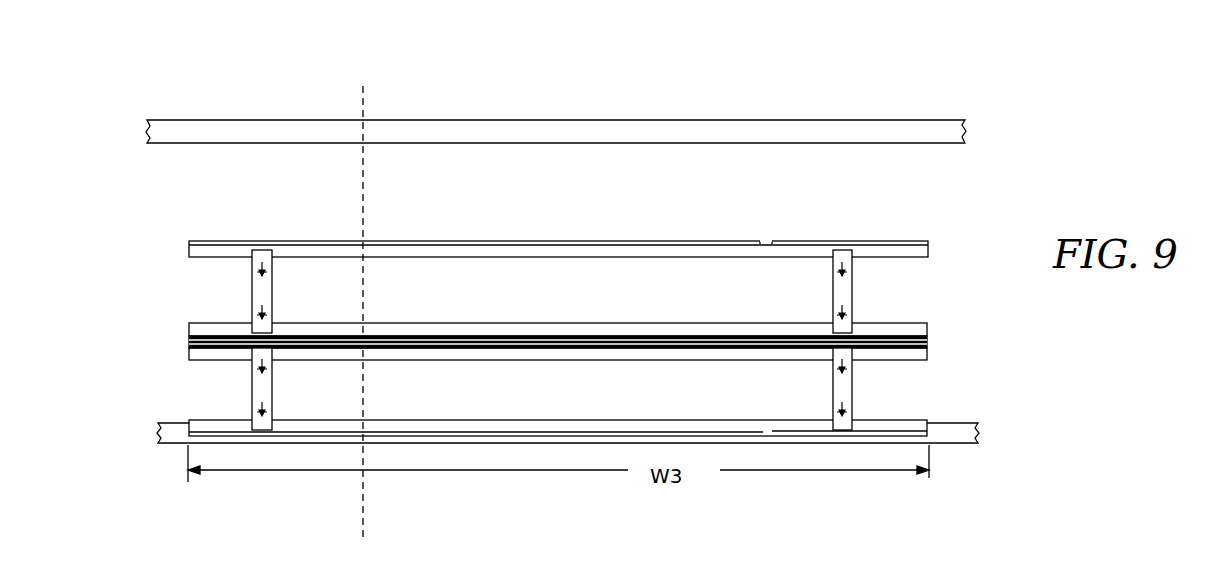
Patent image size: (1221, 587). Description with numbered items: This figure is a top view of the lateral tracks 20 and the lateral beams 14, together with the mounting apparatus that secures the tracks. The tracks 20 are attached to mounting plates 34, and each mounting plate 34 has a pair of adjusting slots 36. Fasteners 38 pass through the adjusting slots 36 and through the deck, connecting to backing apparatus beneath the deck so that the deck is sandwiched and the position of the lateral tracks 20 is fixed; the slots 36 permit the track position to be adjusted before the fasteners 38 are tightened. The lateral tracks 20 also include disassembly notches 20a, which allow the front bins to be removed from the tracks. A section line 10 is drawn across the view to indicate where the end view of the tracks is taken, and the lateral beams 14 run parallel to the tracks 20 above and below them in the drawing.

The section line 10 is at (363, 85).
The lateral beam 14 is at (940, 128).
The lateral track 20 is at (920, 249).
The disassembly notch 20a is at (769, 226).
The mounting plate 34 is at (853, 291).
The adjusting slot 36 is at (834, 276).
The fastener 38 is at (838, 281).